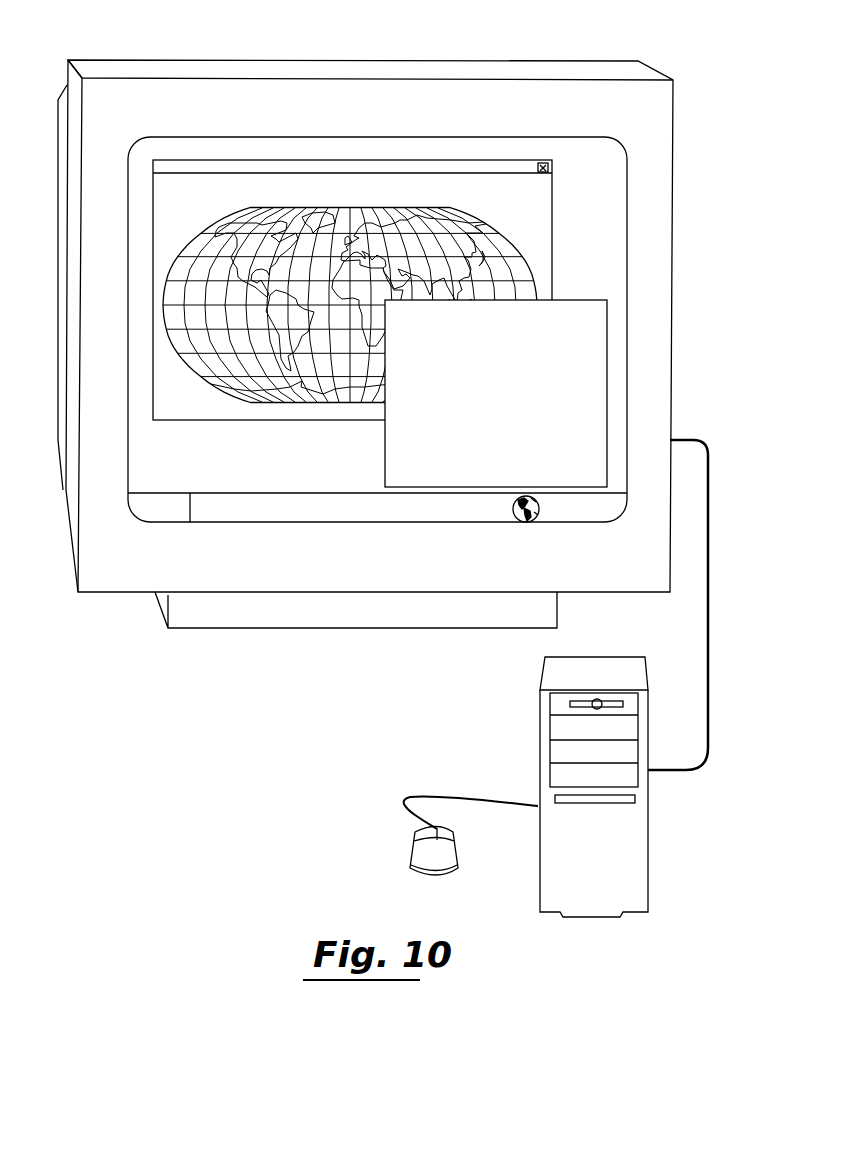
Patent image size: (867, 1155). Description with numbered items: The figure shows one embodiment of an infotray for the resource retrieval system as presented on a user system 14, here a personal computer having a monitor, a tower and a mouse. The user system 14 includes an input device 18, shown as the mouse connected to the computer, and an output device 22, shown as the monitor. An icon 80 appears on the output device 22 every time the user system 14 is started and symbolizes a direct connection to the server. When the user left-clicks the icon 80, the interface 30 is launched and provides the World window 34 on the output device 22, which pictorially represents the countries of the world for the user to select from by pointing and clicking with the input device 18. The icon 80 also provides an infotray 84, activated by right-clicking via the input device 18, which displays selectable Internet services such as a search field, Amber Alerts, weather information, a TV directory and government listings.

The user system 14 is at (668, 52).
The output device 22 is at (676, 265).
The interface 30 is at (213, 158).
The World window 34 is at (538, 222).
The infotray 84 is at (570, 300).
The icon 80 is at (526, 523).
The input device 18 is at (410, 857).